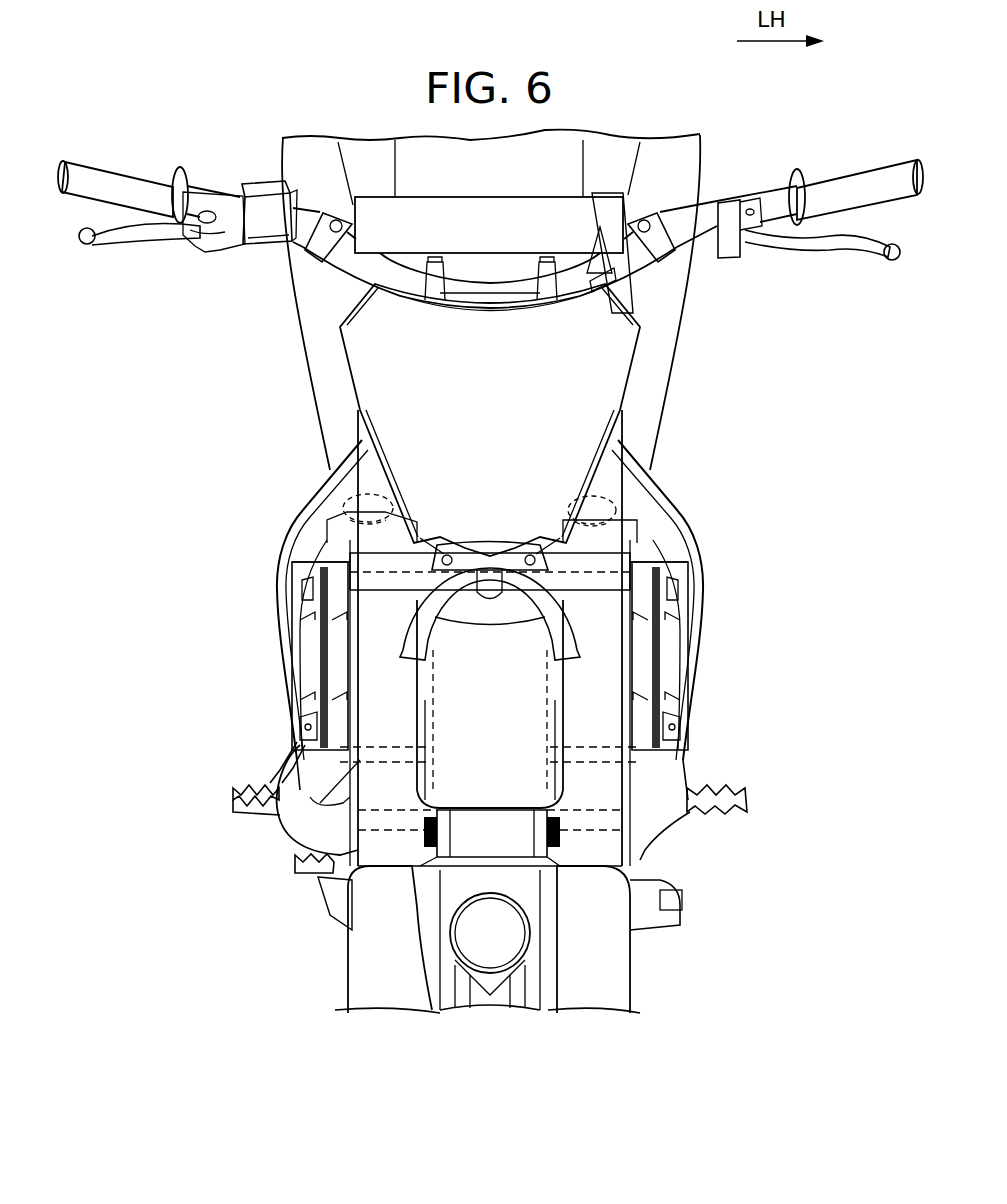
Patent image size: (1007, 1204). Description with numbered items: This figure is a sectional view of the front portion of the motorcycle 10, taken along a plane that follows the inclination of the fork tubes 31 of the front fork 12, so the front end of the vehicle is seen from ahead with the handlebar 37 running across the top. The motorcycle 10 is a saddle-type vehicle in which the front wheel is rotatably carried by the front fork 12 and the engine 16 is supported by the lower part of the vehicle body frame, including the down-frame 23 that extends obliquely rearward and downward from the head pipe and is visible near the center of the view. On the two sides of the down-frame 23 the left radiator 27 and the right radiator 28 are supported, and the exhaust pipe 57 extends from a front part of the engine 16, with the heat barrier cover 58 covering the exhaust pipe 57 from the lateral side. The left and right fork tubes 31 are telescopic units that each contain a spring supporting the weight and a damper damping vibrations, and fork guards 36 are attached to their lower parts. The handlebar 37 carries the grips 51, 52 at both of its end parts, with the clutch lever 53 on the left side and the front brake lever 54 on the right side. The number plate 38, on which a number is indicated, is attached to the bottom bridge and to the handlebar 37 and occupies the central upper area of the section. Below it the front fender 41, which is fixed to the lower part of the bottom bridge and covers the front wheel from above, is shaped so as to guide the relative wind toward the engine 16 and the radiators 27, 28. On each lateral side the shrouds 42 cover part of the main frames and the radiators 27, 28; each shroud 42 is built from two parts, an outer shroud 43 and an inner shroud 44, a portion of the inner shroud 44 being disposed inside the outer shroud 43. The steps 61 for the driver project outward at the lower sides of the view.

The motorcycle 10 is at (270, 78).
The front fork 12 is at (350, 468).
The engine 16 is at (432, 975).
The down-frame 23 is at (428, 860).
The left radiator 27 is at (620, 540).
The right radiator 28 is at (325, 545).
The fork tubes 31 is at (382, 723).
The fork guards 36 is at (367, 965).
The handlebar 37 is at (118, 162).
The number plate 38 is at (372, 356).
The front fender 41 is at (408, 692).
The shrouds 42 is at (298, 508).
The outer shroud 43 is at (273, 553).
The inner shroud 44 is at (333, 650).
The grip 51 is at (843, 186).
The grip 52 is at (150, 187).
The clutch lever 53 is at (846, 246).
The front brake lever 54 is at (122, 232).
The exhaust pipe 57 is at (288, 830).
The heat barrier cover 58 is at (277, 767).
The steps 61 is at (236, 797).